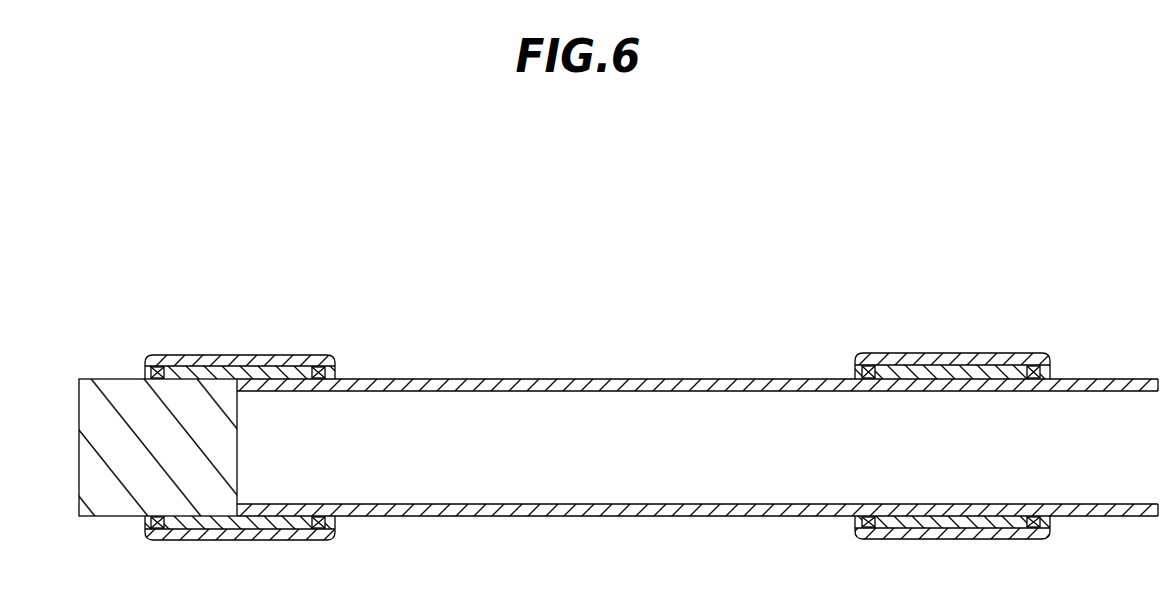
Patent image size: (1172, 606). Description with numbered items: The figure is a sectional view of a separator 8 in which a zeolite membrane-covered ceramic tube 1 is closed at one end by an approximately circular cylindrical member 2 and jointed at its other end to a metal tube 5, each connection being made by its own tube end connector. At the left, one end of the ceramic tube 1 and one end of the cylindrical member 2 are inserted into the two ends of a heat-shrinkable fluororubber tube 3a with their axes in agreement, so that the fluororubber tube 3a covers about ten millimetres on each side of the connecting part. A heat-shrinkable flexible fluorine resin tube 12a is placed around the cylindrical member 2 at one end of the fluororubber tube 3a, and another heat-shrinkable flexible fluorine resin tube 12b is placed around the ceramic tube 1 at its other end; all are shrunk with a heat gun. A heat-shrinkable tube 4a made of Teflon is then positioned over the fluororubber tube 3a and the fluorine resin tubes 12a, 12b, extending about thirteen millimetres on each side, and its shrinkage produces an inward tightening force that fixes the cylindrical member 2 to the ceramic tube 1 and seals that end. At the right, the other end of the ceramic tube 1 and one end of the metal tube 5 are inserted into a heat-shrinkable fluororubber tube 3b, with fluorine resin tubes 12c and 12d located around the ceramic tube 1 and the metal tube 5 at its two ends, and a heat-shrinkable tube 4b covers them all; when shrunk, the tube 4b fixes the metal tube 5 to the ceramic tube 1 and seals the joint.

The zeolite membrane-covered ceramic tube 1 is at (568, 377).
The approximately circular cylindrical member 2 is at (105, 518).
The heat-shrinkable fluororubber tube 3a is at (265, 367).
The heat-shrinkable fluororubber tube 3b is at (978, 366).
The heat-shrinkable tube 4a is at (206, 356).
The heat-shrinkable tube 4b is at (919, 354).
The metal tube 5 is at (1083, 518).
The separator 8 is at (697, 391).
The heat-shrinkable flexible fluorine resin tube 12a is at (159, 366).
The heat-shrinkable flexible fluorine resin tube 12b is at (312, 366).
The heat-shrinkable flexible fluorine resin tube 12c is at (872, 366).
The heat-shrinkable flexible fluorine resin tube 12d is at (1023, 366).